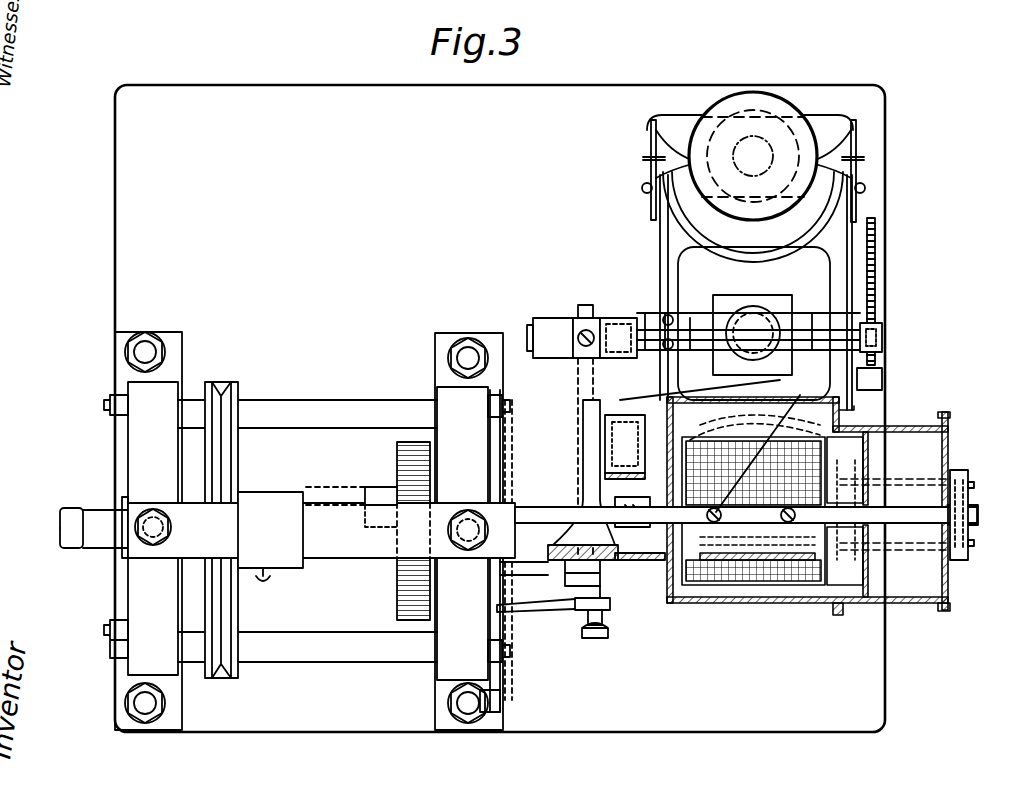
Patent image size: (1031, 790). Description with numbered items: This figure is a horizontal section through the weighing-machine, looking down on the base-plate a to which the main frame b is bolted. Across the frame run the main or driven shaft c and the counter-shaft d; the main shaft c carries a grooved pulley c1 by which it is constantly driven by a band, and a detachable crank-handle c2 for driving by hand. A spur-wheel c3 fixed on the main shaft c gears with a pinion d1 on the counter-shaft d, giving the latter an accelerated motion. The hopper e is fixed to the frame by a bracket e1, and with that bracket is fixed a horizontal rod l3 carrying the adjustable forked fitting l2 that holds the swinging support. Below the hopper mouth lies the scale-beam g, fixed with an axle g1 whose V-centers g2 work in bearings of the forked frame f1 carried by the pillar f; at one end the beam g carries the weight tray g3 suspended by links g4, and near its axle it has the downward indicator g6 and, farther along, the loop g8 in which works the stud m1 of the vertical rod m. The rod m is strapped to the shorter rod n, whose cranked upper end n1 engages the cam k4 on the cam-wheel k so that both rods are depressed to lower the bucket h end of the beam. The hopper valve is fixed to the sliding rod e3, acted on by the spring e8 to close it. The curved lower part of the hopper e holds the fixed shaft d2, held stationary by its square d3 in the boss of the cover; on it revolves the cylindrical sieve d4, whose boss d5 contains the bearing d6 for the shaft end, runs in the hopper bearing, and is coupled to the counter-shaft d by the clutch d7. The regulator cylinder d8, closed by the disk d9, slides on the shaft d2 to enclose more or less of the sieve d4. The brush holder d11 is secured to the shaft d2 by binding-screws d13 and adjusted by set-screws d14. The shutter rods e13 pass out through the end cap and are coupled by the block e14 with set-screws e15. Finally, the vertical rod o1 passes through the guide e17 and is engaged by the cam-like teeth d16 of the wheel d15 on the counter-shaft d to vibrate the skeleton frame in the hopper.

The base-plate a is at (509, 408).
The main frame b is at (437, 397).
The main shaft c is at (307, 531).
The grooved pulley c1 is at (238, 606).
The crank-handle c2 is at (75, 508).
The spur-wheel c3 is at (397, 607).
The counter-shaft d is at (364, 504).
The pinion d1 is at (375, 487).
The cam-like teeth d16 is at (590, 500).
The fixed shaft d2 is at (908, 522).
The square d3 is at (976, 519).
The cylindrical sieve d4 is at (762, 602).
The boss d5 is at (690, 560).
The recess or bearing d6 is at (755, 430).
The clutch d7 is at (670, 606).
The regulator cylinder d8 is at (858, 617).
The disk d9 is at (902, 500).
The brush holder d11 is at (720, 512).
The binding-screws d13 is at (732, 602).
The set-screws d14 is at (715, 472).
The wheel d15 is at (590, 625).
The hopper e is at (814, 603).
The bracket e1 is at (614, 648).
The sliding rod e3 is at (587, 642).
The spring e8 is at (599, 694).
The rods e13 is at (960, 469).
The block or strap e14 is at (967, 572).
The set-screws e15 is at (953, 576).
The guide e17 is at (536, 409).
The pillar f is at (766, 312).
The forked frame f1 is at (690, 318).
The scale-beam g is at (660, 262).
The axle g1 is at (802, 319).
The V-centers g2 is at (882, 332).
The tray or receptacle g3 is at (735, 106).
The links g4 is at (900, 160).
The indicator projection g6 is at (622, 318).
The loop g8 is at (632, 415).
The bucket h is at (846, 566).
The cam-wheel or cylinder k is at (542, 612).
The cam k4 is at (572, 629).
The forked frame-like fitting l2 is at (553, 318).
The horizontal rod l3 is at (586, 305).
The vertical rod m is at (773, 375).
The stud m1 is at (663, 445).
The short vertical rod n is at (580, 406).
The cranked upper end n1 is at (560, 530).
The vertical rod o1 is at (578, 566).